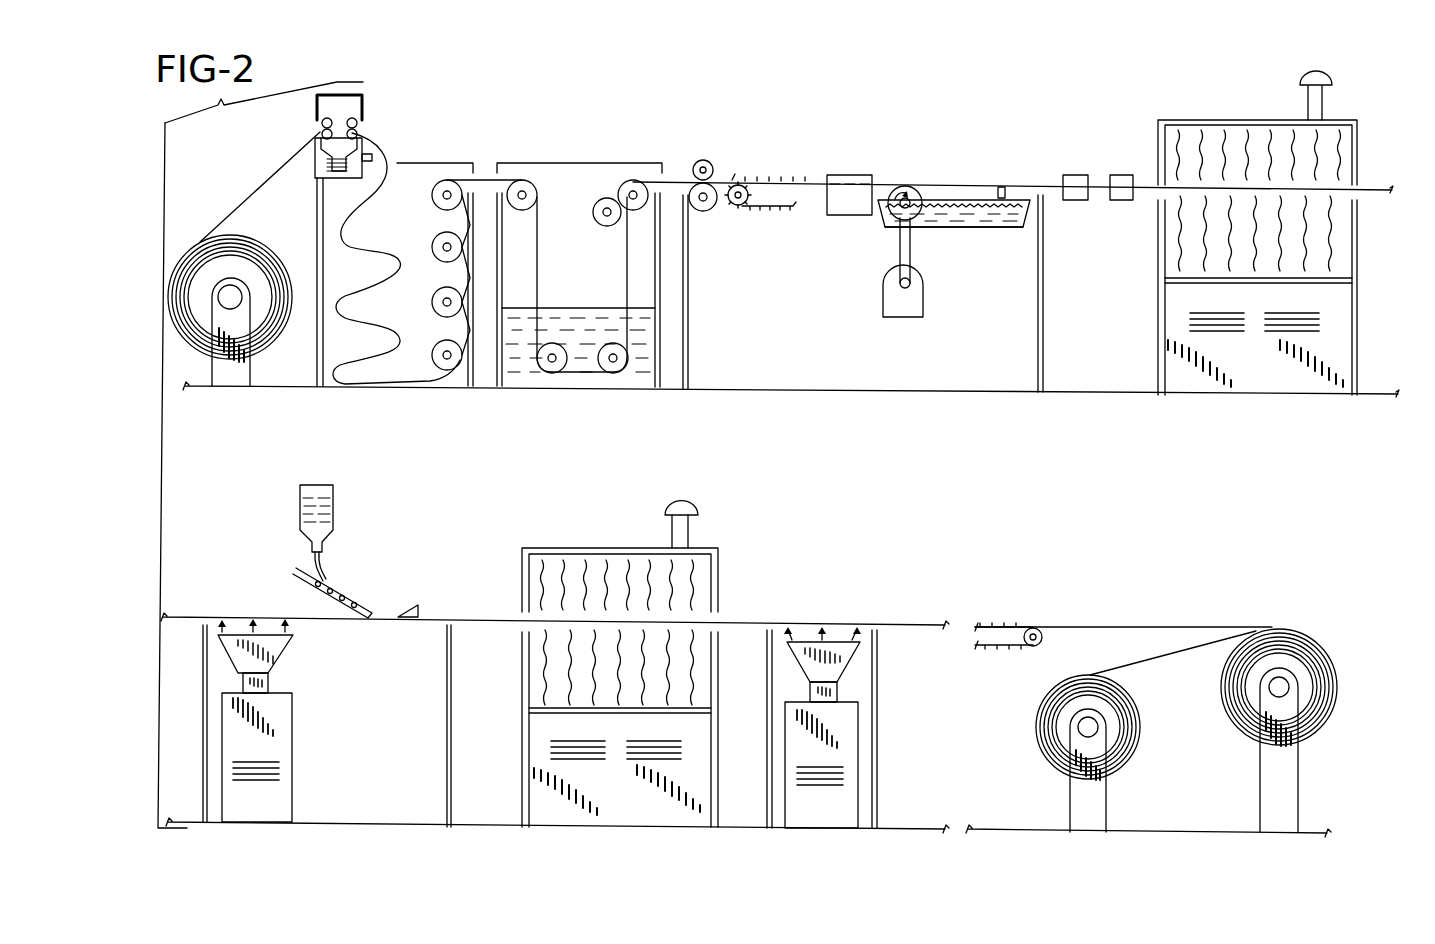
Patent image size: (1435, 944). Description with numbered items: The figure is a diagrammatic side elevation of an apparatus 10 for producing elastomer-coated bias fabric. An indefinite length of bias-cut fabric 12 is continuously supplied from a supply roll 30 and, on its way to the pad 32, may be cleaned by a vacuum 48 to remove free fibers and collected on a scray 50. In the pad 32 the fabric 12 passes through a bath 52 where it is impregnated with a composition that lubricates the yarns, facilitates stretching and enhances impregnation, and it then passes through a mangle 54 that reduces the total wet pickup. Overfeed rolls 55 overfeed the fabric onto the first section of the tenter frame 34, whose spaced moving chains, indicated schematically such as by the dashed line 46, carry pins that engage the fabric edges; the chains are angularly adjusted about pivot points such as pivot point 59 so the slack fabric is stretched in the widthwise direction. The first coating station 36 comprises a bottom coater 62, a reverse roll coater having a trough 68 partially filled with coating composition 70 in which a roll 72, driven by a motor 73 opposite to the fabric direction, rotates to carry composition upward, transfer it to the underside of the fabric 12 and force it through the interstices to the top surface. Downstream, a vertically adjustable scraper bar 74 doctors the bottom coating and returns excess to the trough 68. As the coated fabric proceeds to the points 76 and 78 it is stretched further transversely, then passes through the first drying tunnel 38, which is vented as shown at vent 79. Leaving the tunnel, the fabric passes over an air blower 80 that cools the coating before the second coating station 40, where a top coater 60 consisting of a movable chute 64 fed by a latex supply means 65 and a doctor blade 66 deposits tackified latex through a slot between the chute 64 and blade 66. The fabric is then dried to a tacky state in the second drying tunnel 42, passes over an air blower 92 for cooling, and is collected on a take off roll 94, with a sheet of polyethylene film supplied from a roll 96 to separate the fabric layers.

The apparatus 10 is at (1110, 624).
The bias-cut fabric 12 is at (382, 142).
The supply roll 30 is at (262, 246).
The pad 32 is at (562, 175).
The tenter frame 34 is at (777, 172).
The first coating station 36 is at (960, 181).
The drying tunnel 38 is at (1228, 118).
The second coating station 40 is at (408, 528).
The drying tunnel 42 is at (605, 548).
The moving chain 46 is at (760, 210).
The vacuum 48 is at (323, 97).
The scray 50 is at (382, 220).
The bath 52 is at (569, 306).
The mangle 54 is at (614, 192).
The overfeed rolls 55 is at (700, 212).
The pivot point 59 is at (850, 215).
The top coater 60 is at (343, 588).
The bottom coater 62 is at (963, 233).
The movable chute 64 is at (297, 586).
The latex supply means 65 is at (335, 515).
The doctor blade 66 is at (410, 607).
The trough 68 is at (988, 230).
The coating composition 70 is at (940, 229).
The roll 72 is at (922, 188).
The motor 73 is at (918, 302).
The scraper bar 74 is at (1006, 188).
The point 76 is at (1073, 175).
The point 78 is at (1120, 175).
The vent 79 is at (1305, 100).
The air blower 80 is at (287, 728).
The air blower 92 is at (850, 723).
The take off roll 94 is at (1338, 668).
The roll 96 is at (1140, 732).